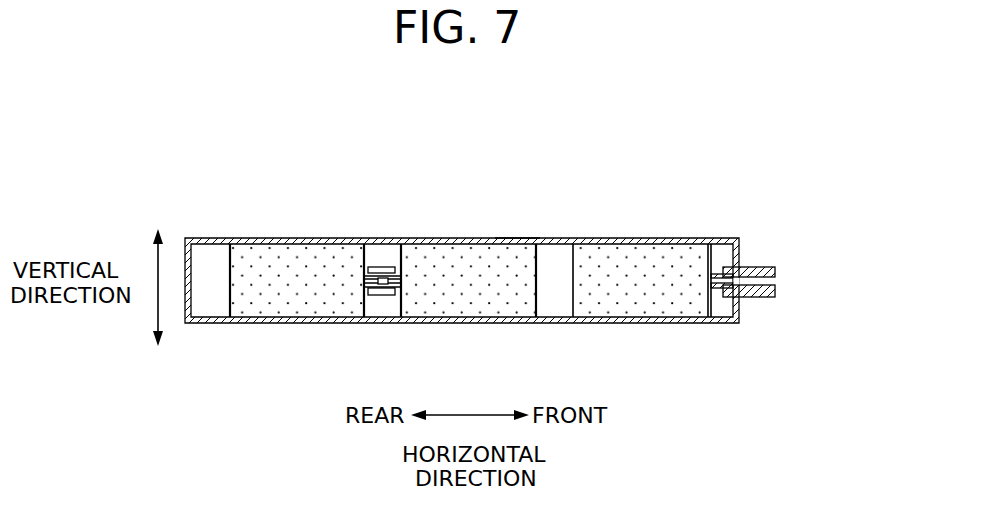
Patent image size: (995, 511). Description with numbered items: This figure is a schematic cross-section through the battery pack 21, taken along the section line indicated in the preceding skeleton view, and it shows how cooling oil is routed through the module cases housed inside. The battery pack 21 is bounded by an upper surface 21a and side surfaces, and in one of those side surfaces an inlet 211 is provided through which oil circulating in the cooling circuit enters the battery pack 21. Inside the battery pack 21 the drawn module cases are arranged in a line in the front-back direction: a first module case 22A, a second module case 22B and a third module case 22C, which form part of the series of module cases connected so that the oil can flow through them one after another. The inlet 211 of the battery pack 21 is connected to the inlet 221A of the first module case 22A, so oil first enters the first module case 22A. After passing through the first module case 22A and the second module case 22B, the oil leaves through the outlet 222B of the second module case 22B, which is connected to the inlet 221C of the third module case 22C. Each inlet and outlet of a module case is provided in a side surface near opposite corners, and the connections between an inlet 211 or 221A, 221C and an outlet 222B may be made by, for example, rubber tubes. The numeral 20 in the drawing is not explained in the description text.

The pressure adjustment unit 20 is at (520, 170).
The battery pack 21 is at (625, 238).
The upper surface 21a is at (515, 238).
The inlet 211 is at (762, 298).
The first module case 22A is at (645, 303).
The second module case 22B is at (468, 307).
The third module case 22C is at (301, 307).
The inlet 221A is at (718, 262).
The inlet 221C is at (368, 263).
The outlet 222B is at (395, 267).